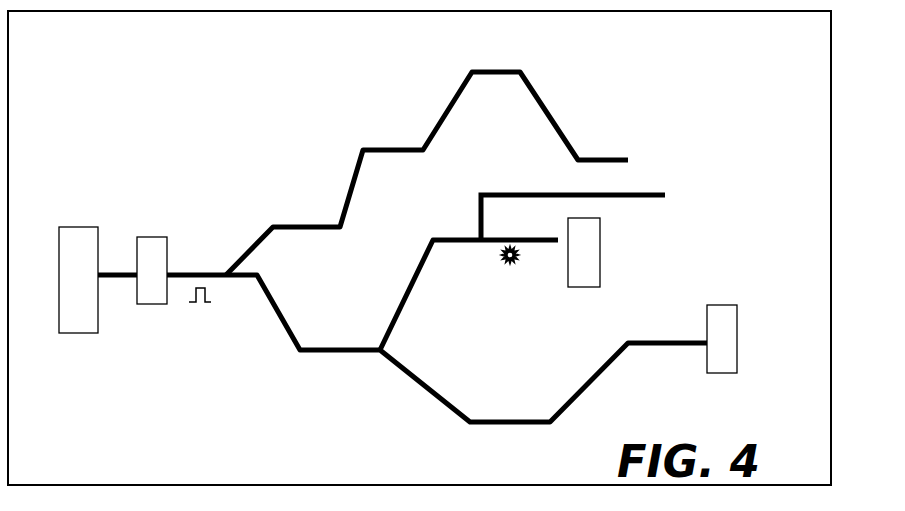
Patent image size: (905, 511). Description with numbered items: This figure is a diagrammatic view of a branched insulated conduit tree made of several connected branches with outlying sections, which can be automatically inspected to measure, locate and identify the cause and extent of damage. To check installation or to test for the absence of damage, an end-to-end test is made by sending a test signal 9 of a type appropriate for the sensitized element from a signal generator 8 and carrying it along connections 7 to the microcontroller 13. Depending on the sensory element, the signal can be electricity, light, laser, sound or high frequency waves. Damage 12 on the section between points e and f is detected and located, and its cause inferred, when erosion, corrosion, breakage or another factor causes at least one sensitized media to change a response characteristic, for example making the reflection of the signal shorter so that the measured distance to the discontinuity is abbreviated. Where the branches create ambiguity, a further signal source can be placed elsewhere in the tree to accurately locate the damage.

The connections 7 is at (292, 205).
The signal generator 8 is at (718, 307).
The test signal 9 is at (187, 312).
The damage 12 is at (573, 229).
The microcontroller 13 is at (74, 192).